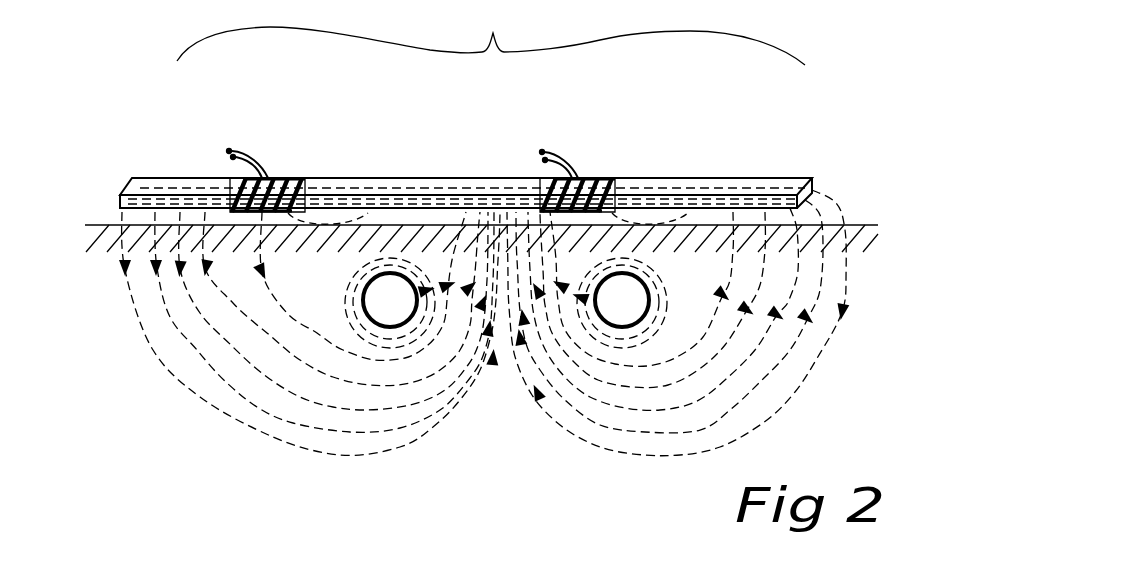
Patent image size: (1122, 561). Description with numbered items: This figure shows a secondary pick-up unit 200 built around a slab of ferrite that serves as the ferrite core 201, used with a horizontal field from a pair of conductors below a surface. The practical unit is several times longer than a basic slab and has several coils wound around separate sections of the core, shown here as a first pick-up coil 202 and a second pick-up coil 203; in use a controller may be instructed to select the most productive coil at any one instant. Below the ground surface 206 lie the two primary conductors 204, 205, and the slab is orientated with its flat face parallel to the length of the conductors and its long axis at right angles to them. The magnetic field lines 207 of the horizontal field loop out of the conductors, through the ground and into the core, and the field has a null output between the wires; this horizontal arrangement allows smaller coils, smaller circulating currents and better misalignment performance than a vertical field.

The magnetic sensor arrangement 200 is at (491, 32).
The ferromagnetic core bar 201 is at (478, 178).
The first coil 202 is at (356, 118).
The second coil 203 is at (692, 134).
The first buried pipe 204 is at (390, 328).
The second buried pipe 205 is at (621, 328).
The ground surface 206 is at (943, 163).
The magnetic field lines 207 is at (484, 351).